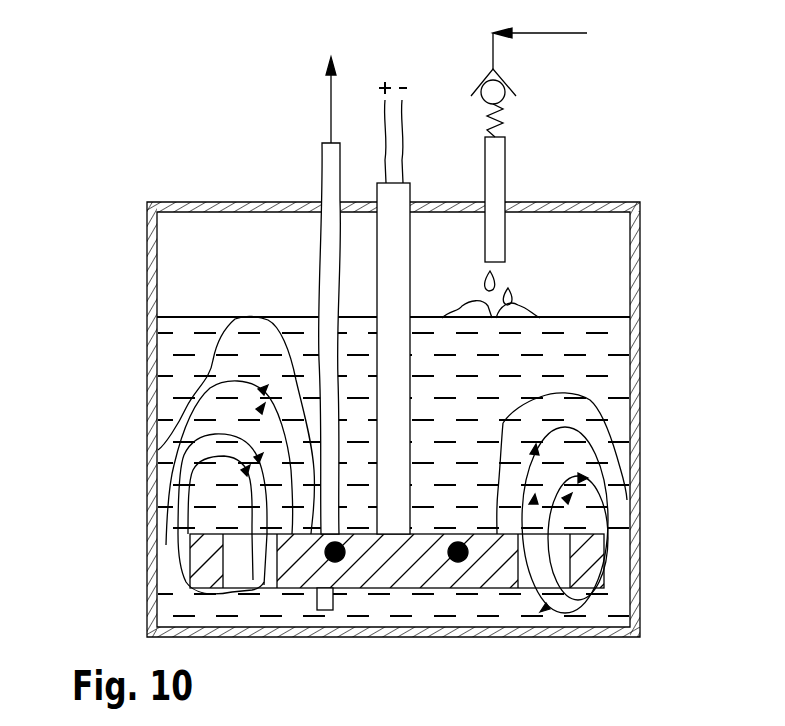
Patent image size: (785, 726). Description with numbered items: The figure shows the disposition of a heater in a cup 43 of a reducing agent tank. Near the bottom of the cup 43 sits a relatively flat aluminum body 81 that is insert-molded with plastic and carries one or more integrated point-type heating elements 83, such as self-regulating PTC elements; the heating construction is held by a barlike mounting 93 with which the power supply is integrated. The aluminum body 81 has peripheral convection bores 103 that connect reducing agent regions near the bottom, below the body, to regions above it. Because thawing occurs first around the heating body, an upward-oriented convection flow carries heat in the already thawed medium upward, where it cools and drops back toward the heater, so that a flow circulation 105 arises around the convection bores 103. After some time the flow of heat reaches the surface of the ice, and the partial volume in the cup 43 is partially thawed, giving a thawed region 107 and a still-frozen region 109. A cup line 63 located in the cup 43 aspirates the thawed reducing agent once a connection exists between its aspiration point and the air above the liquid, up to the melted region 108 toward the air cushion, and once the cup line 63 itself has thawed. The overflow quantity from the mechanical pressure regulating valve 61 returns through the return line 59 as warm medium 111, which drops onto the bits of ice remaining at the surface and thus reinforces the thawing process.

The cup 43 is at (640, 582).
The return line 59 is at (556, 44).
The pressure regulating valve 61 is at (505, 97).
The cup line 63 is at (330, 168).
The relatively flat aluminum body 81 is at (505, 575).
The point-type heating elements 83 is at (341, 561).
The barlike mounting 93 is at (408, 240).
The convection bores 103 is at (240, 568).
The flow circulation 105 is at (612, 460).
The thawed region 107 is at (580, 420).
The melted region 108 is at (258, 318).
The frozen region 109 is at (600, 352).
The warm medium 111 is at (503, 285).